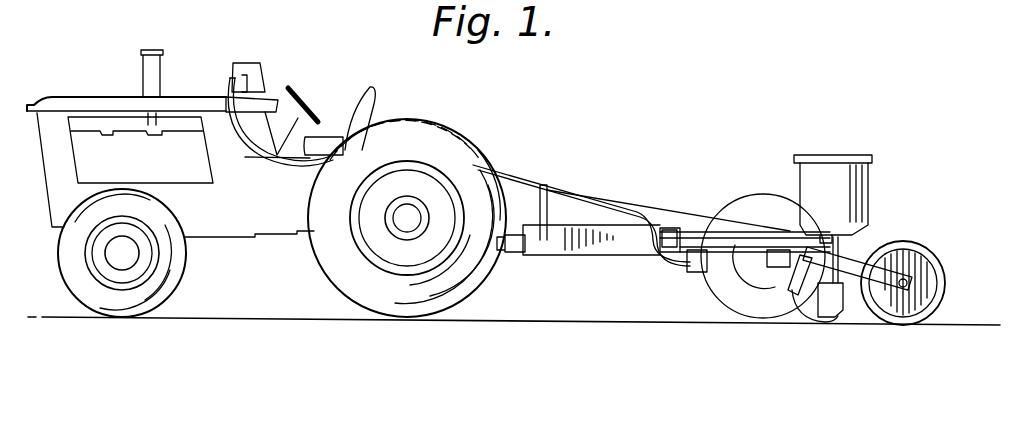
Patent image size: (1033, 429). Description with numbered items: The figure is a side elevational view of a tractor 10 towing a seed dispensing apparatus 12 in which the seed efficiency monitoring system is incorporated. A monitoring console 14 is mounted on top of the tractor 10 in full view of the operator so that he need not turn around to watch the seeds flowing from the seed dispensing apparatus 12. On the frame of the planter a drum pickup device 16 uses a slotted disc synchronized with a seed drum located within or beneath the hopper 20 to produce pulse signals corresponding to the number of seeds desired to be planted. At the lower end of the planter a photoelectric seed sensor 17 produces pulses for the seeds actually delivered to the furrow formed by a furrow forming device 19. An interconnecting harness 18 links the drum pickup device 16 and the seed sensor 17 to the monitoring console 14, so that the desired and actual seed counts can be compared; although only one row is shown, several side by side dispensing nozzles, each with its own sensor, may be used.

The tractor 10 is at (127, 85).
The seed dispensing apparatus 12 is at (790, 170).
The monitoring console 14 is at (268, 70).
The drum pickup device 16 is at (693, 279).
The seed sensor 17 is at (765, 282).
The interconnecting harness 18 is at (636, 146).
The furrow forming device 19 is at (812, 328).
The hopper 20 is at (862, 185).